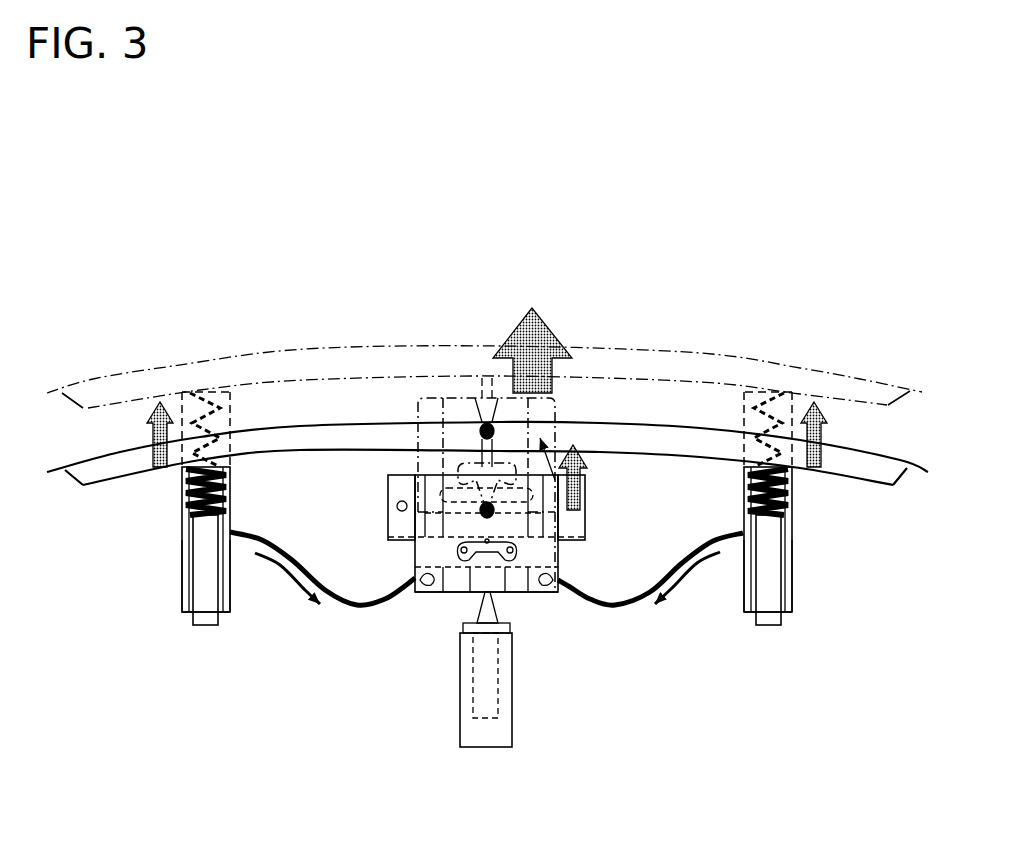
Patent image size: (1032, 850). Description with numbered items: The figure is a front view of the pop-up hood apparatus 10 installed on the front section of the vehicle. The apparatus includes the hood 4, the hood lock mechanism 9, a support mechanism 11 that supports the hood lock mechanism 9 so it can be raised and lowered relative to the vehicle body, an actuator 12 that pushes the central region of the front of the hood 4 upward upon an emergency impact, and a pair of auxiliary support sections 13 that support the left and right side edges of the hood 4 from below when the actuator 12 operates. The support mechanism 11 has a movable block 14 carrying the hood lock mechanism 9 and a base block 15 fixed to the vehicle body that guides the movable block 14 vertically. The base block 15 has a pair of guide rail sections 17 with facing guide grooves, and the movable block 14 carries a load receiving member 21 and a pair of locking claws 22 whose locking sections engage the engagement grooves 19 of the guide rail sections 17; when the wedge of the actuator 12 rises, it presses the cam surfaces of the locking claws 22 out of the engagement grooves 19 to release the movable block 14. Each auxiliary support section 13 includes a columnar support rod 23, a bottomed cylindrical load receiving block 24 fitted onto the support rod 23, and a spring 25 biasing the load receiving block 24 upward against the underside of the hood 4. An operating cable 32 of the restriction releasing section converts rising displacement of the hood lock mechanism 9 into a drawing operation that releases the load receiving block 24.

The hood 4 is at (290, 427).
The hood lock mechanism 9 is at (555, 592).
The pop-up hood apparatus 10 is at (713, 210).
The support mechanism 11 is at (422, 596).
The actuator 12 is at (460, 715).
The auxiliary support section 13 is at (172, 497).
The movable block 14 is at (432, 560).
The base block 15 is at (582, 497).
The guide rail section 17 is at (417, 528).
The engagement groove 19 is at (430, 580).
The load receiving member 21 is at (480, 540).
The locking claw 22 is at (452, 578).
The support rod 23 is at (207, 626).
The load receiving block 24 is at (182, 552).
The spring 25 is at (182, 482).
The operating cable 32 is at (248, 541).